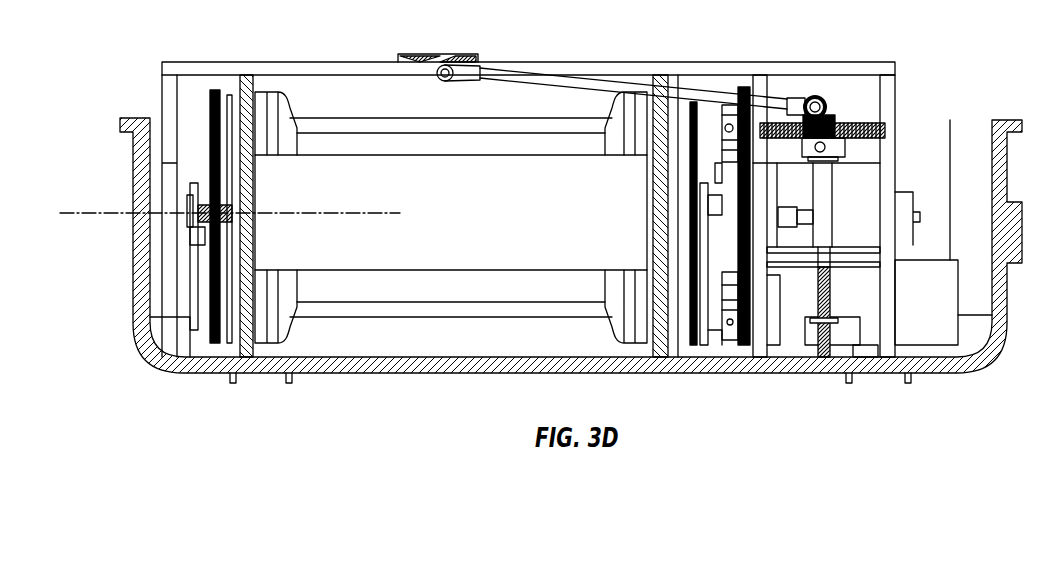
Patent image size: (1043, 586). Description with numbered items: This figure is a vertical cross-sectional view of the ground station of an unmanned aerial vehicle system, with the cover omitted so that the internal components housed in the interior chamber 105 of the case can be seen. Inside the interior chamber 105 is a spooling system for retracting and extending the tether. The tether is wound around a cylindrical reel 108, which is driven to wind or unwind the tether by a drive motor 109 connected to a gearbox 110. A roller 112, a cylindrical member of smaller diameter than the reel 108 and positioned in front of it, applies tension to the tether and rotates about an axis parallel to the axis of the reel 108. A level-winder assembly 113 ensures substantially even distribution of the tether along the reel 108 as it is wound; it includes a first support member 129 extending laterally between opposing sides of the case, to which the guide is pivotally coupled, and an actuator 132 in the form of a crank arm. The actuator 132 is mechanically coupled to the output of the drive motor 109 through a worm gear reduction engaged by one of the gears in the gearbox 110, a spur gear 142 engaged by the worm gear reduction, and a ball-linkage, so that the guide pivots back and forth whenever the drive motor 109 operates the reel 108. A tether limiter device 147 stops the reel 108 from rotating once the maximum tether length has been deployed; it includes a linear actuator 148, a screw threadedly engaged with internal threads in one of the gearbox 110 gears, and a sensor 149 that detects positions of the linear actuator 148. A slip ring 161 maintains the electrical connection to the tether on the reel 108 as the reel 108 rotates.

The interior chamber 105 is at (970, 150).
The reel 108 is at (355, 143).
The drive motor 109 is at (793, 303).
The gearbox 110 is at (722, 347).
The roller 112 is at (467, 233).
The level-winder assembly 113 is at (805, 88).
The first support member 129 is at (722, 72).
The actuator 132 is at (618, 90).
The spur gear 142 is at (860, 120).
The tether limiter device 147 is at (853, 303).
The linear actuator 148 is at (832, 305).
The sensor 149 is at (864, 350).
The slip ring 161 is at (903, 202).